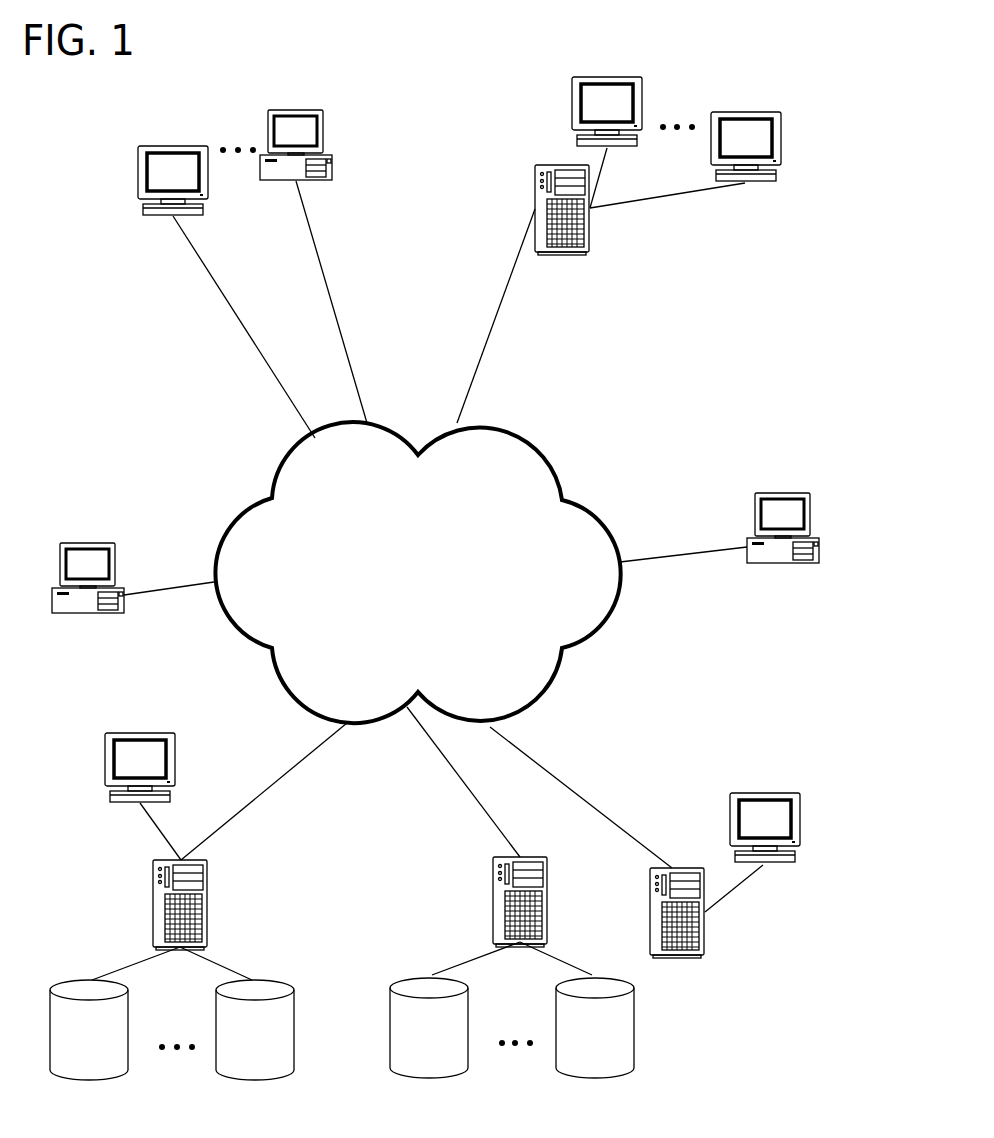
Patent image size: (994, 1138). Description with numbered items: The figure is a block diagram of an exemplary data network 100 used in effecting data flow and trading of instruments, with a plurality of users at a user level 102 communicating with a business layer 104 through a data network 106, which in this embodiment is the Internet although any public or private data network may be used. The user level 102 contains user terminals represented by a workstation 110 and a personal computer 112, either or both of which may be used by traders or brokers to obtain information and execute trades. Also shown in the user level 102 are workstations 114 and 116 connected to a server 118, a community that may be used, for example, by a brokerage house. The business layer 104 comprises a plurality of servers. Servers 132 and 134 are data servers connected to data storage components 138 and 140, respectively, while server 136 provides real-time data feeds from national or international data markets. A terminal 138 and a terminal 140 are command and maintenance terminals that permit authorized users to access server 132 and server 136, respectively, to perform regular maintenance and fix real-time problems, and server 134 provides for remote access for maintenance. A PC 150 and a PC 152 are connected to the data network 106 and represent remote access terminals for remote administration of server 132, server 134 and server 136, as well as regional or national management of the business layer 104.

The data network 100 is at (129, 444).
The user level 102 is at (747, 352).
The business layer 104 is at (827, 721).
The data network 106 is at (357, 550).
The workstation 110 is at (203, 144).
The personal computer 112 is at (324, 126).
The workstation 114 is at (565, 95).
The workstation 116 is at (767, 178).
The server 118 is at (640, 233).
The server 132 is at (143, 895).
The server 134 is at (482, 891).
The server 136 is at (733, 932).
The data storage component / terminal 138 is at (353, 953).
The data storage component / terminal 140 is at (768, 1041).
The personal computer 150 is at (73, 556).
The personal computer 152 is at (750, 504).